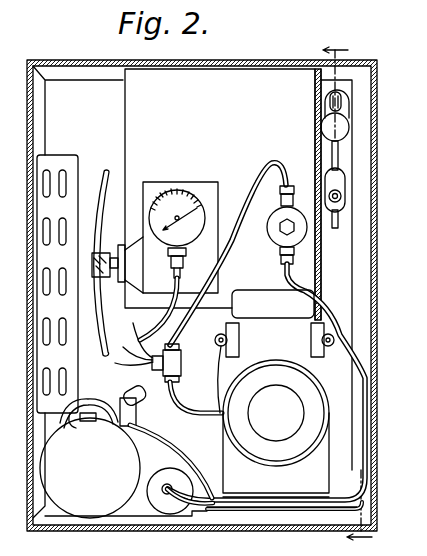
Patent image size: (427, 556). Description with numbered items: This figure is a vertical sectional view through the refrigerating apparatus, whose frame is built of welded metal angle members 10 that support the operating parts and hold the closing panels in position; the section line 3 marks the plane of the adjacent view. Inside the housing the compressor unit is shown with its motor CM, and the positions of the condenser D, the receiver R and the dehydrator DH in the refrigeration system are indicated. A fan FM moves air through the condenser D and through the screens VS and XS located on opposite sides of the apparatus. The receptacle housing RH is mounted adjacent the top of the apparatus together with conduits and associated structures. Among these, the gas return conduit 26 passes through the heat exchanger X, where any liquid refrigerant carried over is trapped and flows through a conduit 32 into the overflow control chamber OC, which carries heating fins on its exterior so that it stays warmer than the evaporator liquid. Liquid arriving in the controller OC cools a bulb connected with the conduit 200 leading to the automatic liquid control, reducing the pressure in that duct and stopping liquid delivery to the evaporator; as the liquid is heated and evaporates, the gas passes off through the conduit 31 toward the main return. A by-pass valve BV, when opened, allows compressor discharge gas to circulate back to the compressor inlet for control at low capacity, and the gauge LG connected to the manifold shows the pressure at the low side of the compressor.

The metal angle members 10 is at (38, 108).
The section line 3— 3 is at (347, 293).
The condenser D is at (61, 156).
The screen XS is at (37, 360).
The low-side gauge LG is at (173, 182).
The fan FM is at (196, 238).
The by-pass valve BV is at (277, 240).
The heat exchanger X is at (347, 102).
The gas return conduit 26 is at (330, 105).
The receptacle housing RH is at (290, 116).
The conduit 32 is at (331, 157).
The overflow control chamber OC is at (350, 180).
The conduit 200 is at (342, 196).
The conduit 31 is at (339, 219).
The motor CM is at (319, 420).
The screen VS is at (379, 469).
The receiver R is at (126, 451).
The dehydrator DH is at (170, 507).